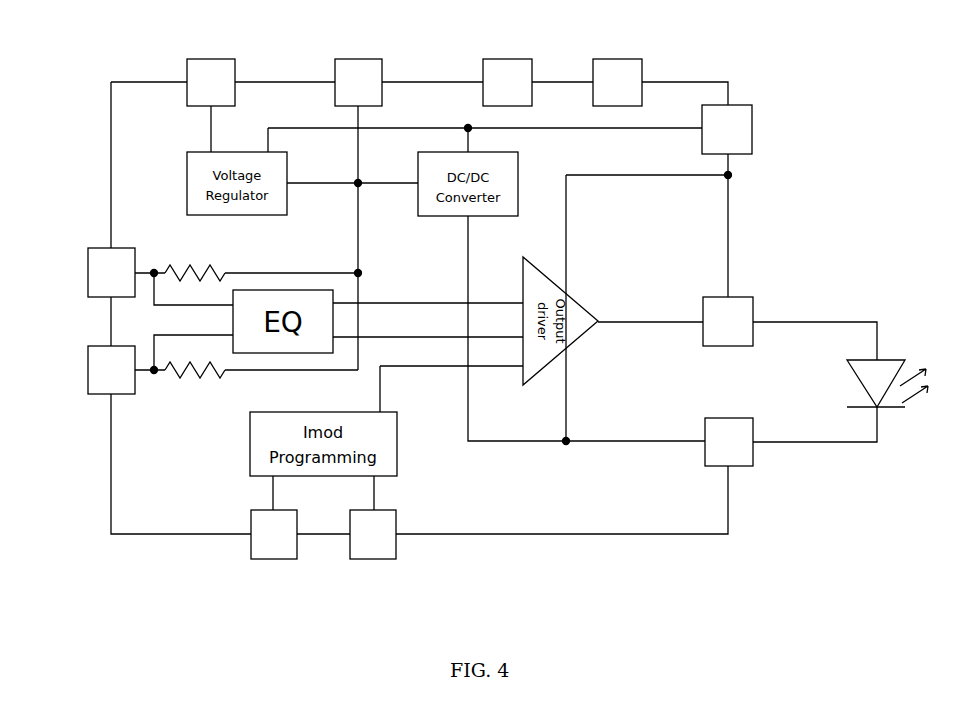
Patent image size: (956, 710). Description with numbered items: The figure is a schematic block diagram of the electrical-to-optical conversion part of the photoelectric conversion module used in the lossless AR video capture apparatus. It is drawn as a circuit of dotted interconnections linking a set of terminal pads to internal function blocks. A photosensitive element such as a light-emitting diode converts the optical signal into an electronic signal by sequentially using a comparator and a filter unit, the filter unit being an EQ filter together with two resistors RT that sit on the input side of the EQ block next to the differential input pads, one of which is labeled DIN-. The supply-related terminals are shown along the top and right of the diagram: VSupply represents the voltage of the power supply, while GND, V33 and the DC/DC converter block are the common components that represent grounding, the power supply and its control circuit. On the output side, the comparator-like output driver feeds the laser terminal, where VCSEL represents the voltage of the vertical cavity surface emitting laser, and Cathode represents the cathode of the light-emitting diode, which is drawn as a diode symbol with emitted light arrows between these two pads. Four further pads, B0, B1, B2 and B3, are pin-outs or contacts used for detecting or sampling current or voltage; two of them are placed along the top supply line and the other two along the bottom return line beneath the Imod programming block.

The grounding GND is at (213, 65).
The power supply V33 is at (358, 65).
The pin-out B0 is at (507, 65).
The pin-out B1 is at (617, 65).
The pin-out B2 is at (274, 555).
The pin-out B3 is at (373, 555).
The voltage of the power supply VSupply is at (782, 129).
The voltage of the CSEL laser VCSEL is at (784, 313).
The cathode of the light-emitting diode Cathode is at (797, 453).
The negative data input DIN- is at (78, 370).
The resistor RT is at (195, 324).